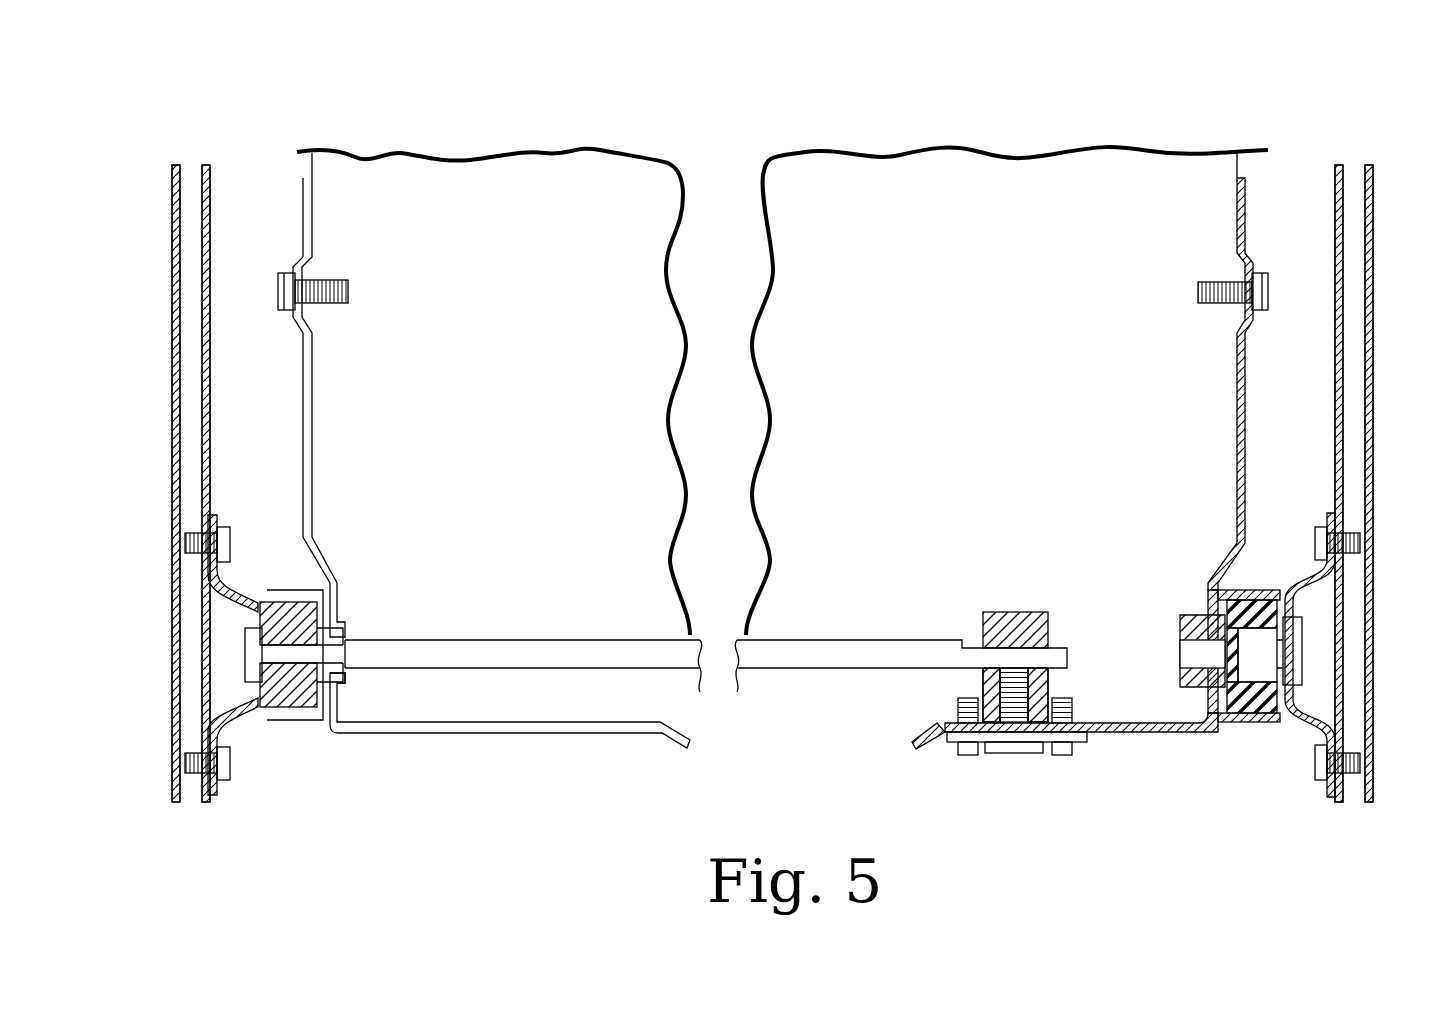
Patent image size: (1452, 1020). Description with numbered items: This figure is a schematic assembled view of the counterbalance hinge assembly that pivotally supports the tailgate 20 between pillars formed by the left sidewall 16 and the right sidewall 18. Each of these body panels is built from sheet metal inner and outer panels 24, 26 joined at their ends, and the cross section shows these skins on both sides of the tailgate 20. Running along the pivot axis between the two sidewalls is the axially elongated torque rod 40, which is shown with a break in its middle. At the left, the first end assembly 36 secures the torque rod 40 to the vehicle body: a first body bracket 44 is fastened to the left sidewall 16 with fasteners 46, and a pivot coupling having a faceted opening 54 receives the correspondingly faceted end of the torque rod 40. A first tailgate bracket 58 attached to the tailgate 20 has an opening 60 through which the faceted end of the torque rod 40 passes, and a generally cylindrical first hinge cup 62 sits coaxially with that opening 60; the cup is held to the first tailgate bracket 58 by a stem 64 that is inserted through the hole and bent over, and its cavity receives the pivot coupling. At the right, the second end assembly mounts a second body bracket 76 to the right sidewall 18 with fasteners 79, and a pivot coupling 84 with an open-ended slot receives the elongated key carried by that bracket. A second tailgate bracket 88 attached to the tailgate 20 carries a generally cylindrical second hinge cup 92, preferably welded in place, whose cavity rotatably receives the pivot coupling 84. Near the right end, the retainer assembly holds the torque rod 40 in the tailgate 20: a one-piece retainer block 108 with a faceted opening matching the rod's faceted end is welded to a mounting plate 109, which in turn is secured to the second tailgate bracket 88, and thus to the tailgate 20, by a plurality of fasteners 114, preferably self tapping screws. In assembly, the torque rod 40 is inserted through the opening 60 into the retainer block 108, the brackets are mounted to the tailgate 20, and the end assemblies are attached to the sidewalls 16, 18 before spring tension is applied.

The left sidewall 16 is at (145, 342).
The right sidewall 18 is at (1383, 356).
The tailgate 20 is at (503, 244).
The inner panel 24 is at (210, 185).
The outer panel 26 is at (174, 210).
The first end assembly 36 is at (285, 752).
The torque rod 40 is at (473, 628).
The first body bracket 44 is at (230, 604).
The fasteners 46 is at (225, 527).
The faceted opening 54 is at (247, 660).
The first tailgate bracket 58 is at (313, 455).
The opening 60 is at (352, 650).
The first hinge cup 62 is at (305, 720).
The stem 64 is at (348, 681).
The second body bracket 76 is at (1343, 598).
The fasteners 79 is at (1323, 527).
The pivot coupling 84 is at (1253, 592).
The second tailgate bracket 88 is at (1235, 420).
The second hinge cup 92 is at (1220, 572).
The retainer block 108 is at (1012, 612).
The mounting plate 109 is at (922, 748).
The fasteners 114 is at (966, 757).